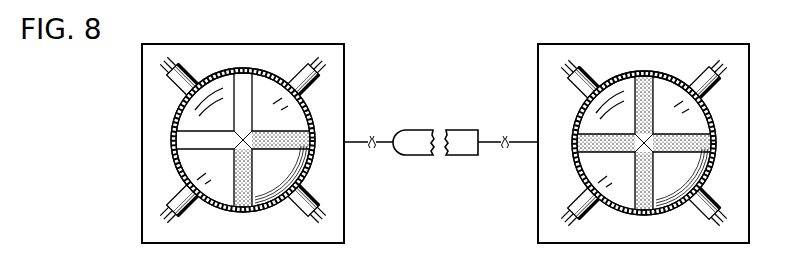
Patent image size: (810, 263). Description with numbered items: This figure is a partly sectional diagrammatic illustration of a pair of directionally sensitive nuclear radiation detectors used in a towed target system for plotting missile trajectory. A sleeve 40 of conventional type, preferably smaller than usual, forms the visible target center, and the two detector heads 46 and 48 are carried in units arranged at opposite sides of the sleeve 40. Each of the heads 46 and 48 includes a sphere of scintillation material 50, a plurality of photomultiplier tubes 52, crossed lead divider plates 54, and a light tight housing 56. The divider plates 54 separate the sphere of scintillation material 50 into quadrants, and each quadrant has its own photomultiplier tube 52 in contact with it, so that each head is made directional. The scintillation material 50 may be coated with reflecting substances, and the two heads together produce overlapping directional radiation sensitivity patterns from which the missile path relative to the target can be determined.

The sleeve 40 is at (458, 140).
The radiation detector head 46 is at (251, 63).
The radiation detector head 48 is at (671, 63).
The sphere of scintillation material 50 is at (282, 122).
The photomultiplier tubes 52 is at (184, 197).
The crossed lead divider plates 54 is at (192, 129).
The light tight housing 56 is at (142, 81).